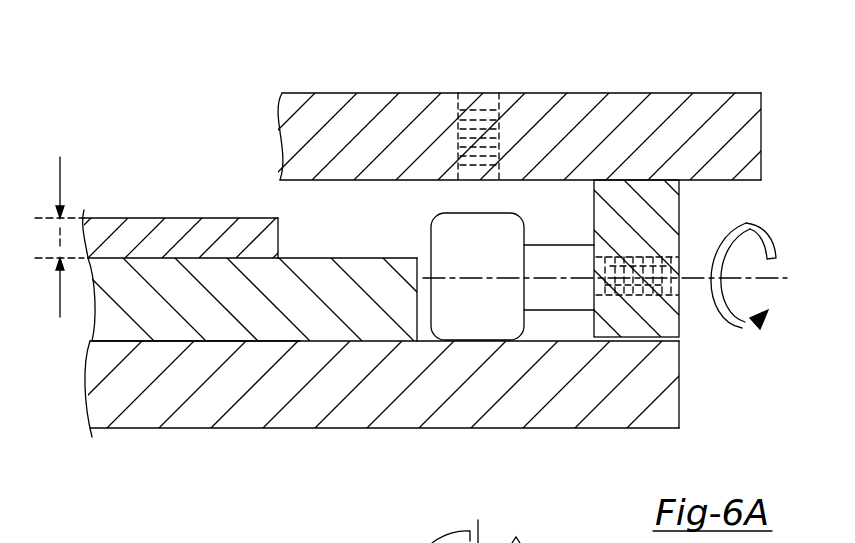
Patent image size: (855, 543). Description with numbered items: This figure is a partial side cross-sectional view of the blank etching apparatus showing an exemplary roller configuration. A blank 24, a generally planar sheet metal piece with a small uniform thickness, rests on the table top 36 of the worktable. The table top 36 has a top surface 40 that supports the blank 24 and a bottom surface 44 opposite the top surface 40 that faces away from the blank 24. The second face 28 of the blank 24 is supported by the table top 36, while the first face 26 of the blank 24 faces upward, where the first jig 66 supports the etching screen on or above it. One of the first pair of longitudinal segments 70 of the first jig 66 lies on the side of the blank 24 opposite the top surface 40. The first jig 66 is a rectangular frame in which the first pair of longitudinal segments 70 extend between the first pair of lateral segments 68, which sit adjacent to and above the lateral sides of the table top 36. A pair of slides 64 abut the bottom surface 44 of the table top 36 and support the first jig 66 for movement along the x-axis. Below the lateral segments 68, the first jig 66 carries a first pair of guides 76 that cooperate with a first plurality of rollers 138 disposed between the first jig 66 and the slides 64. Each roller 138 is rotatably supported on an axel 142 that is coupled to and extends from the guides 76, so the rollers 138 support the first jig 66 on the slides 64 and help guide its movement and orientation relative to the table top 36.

The blank 24 is at (110, 222).
The first face 26 is at (216, 208).
The second face 28 is at (181, 266).
The table top 36 is at (175, 330).
The top surface 40 is at (343, 250).
The bottom surface 44 is at (265, 350).
The pair of slides 64 is at (603, 427).
The first jig 66 is at (523, 96).
The first pair of lateral segments 68 is at (707, 105).
The first pair of longitudinal segments 70 is at (312, 104).
The first pair of guides 76 is at (677, 218).
The first plurality of rollers 138 is at (470, 330).
The axel 142 is at (560, 298).